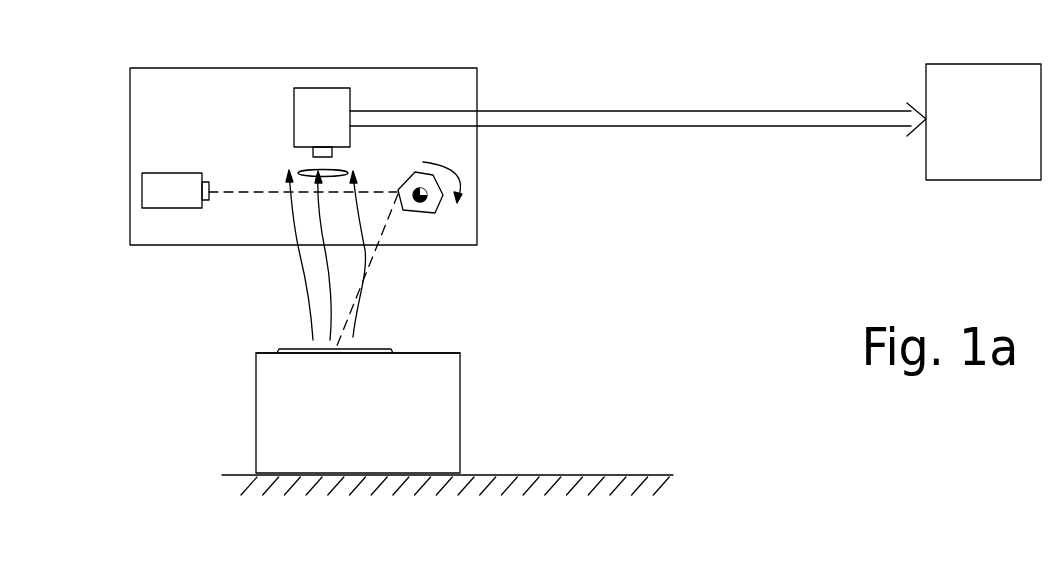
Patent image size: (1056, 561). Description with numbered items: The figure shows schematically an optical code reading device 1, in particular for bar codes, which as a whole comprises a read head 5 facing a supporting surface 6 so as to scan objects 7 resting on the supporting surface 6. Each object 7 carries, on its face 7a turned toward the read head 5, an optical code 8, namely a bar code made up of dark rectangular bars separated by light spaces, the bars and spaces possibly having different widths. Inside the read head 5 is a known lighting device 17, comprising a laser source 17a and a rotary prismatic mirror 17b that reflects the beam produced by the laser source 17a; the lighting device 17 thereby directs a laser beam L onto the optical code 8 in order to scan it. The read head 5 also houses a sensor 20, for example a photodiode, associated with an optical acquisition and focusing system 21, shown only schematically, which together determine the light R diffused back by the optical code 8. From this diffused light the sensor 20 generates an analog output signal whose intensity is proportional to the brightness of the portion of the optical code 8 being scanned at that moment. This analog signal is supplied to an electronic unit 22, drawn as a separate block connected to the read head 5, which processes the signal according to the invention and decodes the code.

The reading device 1 is at (365, 58).
The read head 5 is at (242, 64).
The supporting surface 6 is at (227, 470).
The object 7 is at (438, 397).
The face 7a is at (413, 350).
The optical code 8 is at (284, 347).
The lighting device 17 is at (247, 245).
The laser source 17a is at (158, 193).
The rotary prismatic mirror 17b is at (428, 207).
The sensor 20 is at (319, 107).
The optical acquisition and focusing system 21 is at (298, 172).
The electronic unit 22 is at (997, 158).
The light diffused by optical code R is at (362, 264).
The laser beam L is at (372, 252).